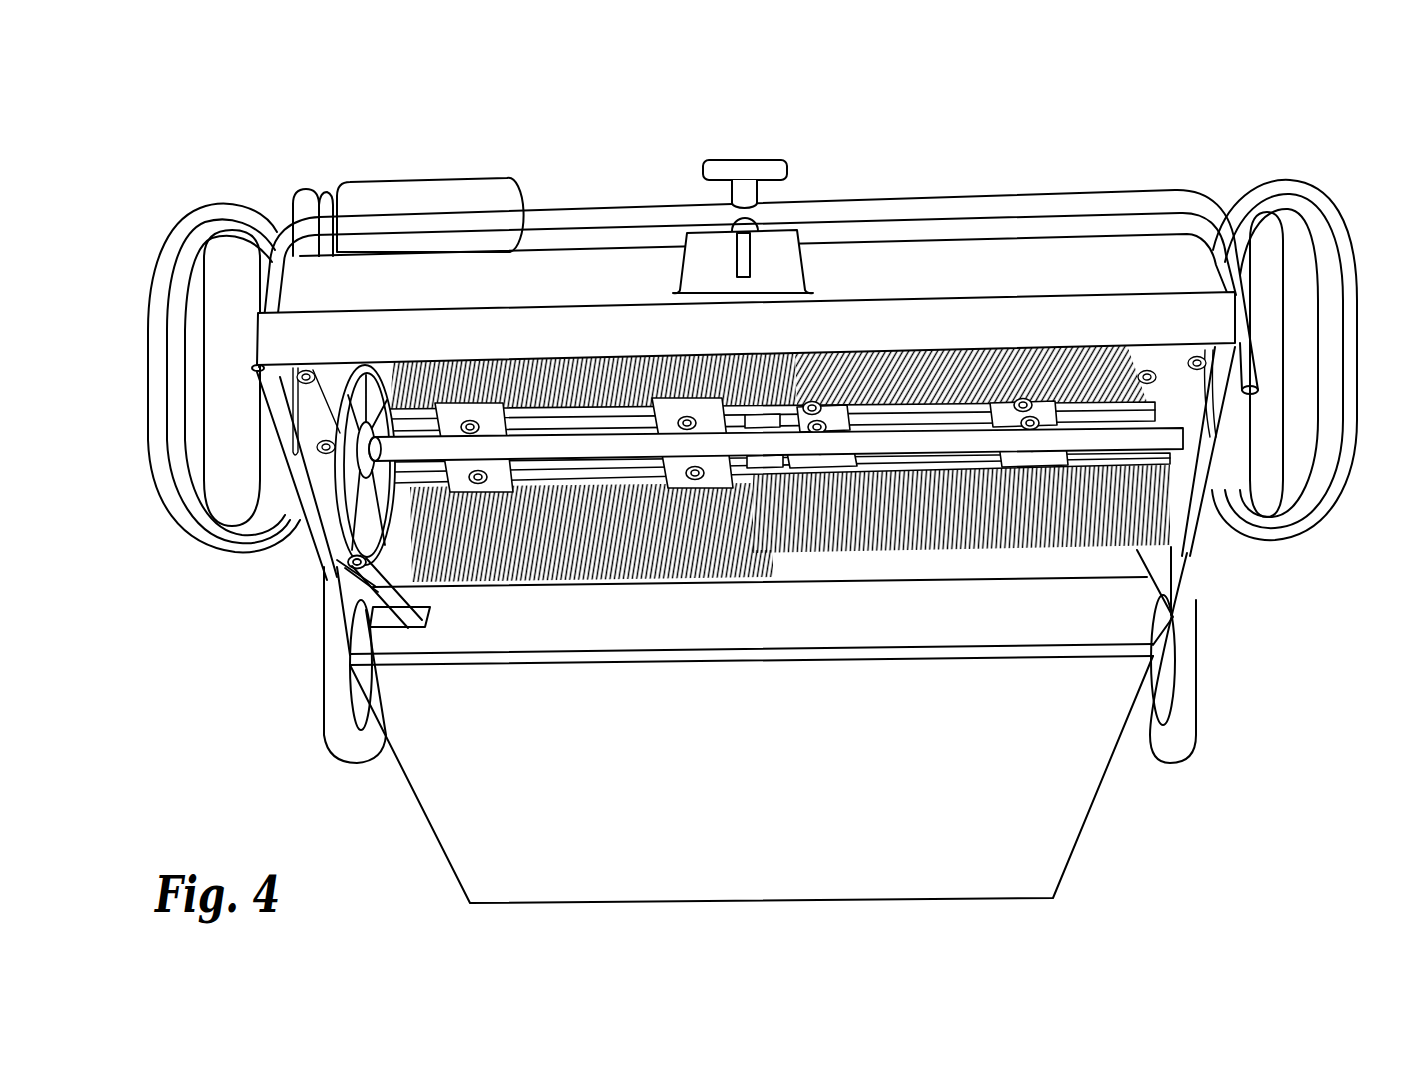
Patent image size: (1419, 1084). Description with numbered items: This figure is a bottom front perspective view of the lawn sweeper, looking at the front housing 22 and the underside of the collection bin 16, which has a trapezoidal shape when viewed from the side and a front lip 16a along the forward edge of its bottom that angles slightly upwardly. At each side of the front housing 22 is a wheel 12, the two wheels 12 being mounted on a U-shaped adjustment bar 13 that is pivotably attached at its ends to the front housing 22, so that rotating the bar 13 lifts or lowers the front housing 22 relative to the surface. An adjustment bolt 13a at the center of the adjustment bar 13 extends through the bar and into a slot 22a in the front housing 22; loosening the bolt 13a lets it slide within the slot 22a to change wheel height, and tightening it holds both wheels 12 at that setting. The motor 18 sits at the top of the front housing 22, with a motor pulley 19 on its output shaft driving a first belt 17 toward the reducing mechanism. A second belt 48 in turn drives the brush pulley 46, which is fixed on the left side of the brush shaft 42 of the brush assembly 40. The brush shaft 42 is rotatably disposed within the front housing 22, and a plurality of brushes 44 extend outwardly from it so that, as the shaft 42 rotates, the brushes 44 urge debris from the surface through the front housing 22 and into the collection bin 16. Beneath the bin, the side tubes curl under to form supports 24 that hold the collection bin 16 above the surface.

The wheel 12 is at (173, 308).
The adjustment bar 13 is at (893, 203).
The adjustment bolt 13a is at (743, 167).
The collection bin 16 is at (1037, 825).
The front lip 16a is at (1093, 580).
The first belt 17 is at (307, 190).
The motor 18 is at (440, 187).
The motor pulley 19 is at (322, 198).
The front housing 22 is at (1035, 262).
The slot 22a is at (745, 252).
The support 24 is at (347, 737).
The brush assembly 40 is at (1168, 436).
The brush shaft 42 is at (908, 437).
The brush 44 is at (578, 373).
The brush pulley 46 is at (340, 567).
The second belt 48 is at (380, 573).